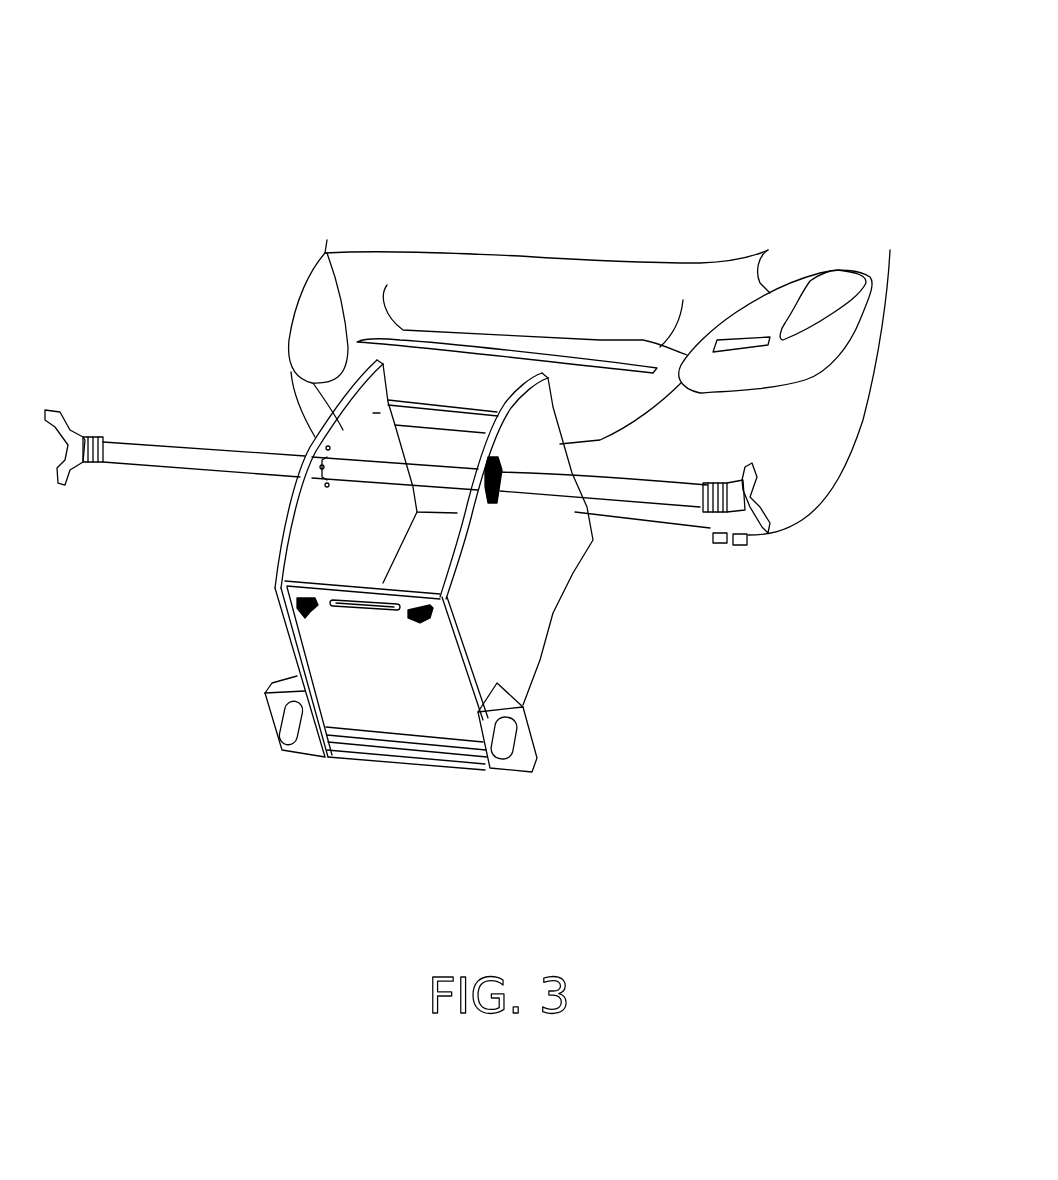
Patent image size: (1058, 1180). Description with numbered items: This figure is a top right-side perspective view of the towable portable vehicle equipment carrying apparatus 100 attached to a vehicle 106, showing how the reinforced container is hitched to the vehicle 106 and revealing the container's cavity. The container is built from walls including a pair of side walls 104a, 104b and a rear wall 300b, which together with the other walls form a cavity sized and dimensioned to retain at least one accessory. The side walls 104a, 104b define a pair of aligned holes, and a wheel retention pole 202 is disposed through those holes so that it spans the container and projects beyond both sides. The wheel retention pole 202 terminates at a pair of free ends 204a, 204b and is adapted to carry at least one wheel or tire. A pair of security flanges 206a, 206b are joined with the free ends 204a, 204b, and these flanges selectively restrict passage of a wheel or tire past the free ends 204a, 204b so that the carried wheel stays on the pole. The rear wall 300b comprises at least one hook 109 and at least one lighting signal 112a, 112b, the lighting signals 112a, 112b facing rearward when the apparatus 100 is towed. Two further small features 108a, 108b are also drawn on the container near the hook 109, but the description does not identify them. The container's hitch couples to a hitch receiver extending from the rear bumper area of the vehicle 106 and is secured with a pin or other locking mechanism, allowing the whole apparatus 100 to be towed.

The towable portable vehicle equipment carrying apparatus 100 is at (278, 156).
The vehicle 106 is at (685, 235).
The side wall 104a is at (343, 430).
The side wall 104b is at (515, 597).
The wheel retention pole 202 is at (644, 508).
The free end 204a is at (90, 463).
The free end 204b is at (705, 522).
The security flange 206a is at (72, 437).
The security flange 206b is at (743, 478).
The first clip 108a is at (313, 613).
The second clip 108b is at (427, 627).
The hook 109 is at (307, 613).
The lighting signal 112a is at (297, 723).
The lighting signal 112b is at (510, 745).
The rear wall 300b is at (383, 682).